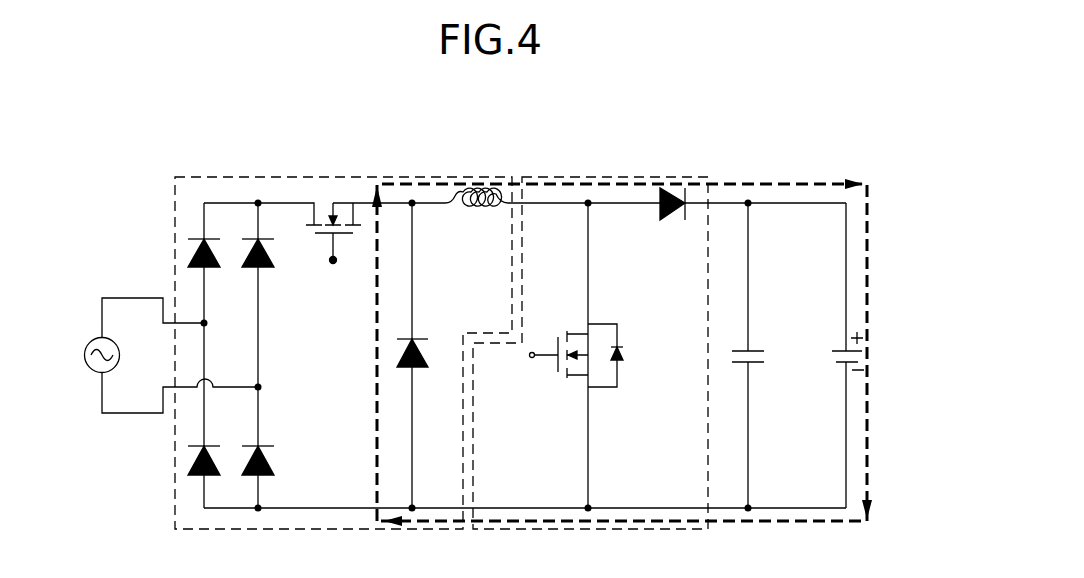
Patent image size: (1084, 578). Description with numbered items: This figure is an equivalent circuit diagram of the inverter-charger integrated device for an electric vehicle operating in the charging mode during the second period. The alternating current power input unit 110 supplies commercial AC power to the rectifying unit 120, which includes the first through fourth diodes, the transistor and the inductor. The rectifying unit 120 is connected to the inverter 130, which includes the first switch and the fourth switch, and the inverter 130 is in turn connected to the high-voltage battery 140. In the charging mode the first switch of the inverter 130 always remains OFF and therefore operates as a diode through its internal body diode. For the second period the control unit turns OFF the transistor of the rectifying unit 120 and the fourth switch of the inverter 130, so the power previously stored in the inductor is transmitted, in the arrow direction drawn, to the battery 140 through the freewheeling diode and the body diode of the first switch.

The alternating current power input unit 110 is at (87, 340).
The rectifying unit 120 is at (333, 177).
The inverter 130 is at (602, 177).
The battery 140 is at (865, 351).